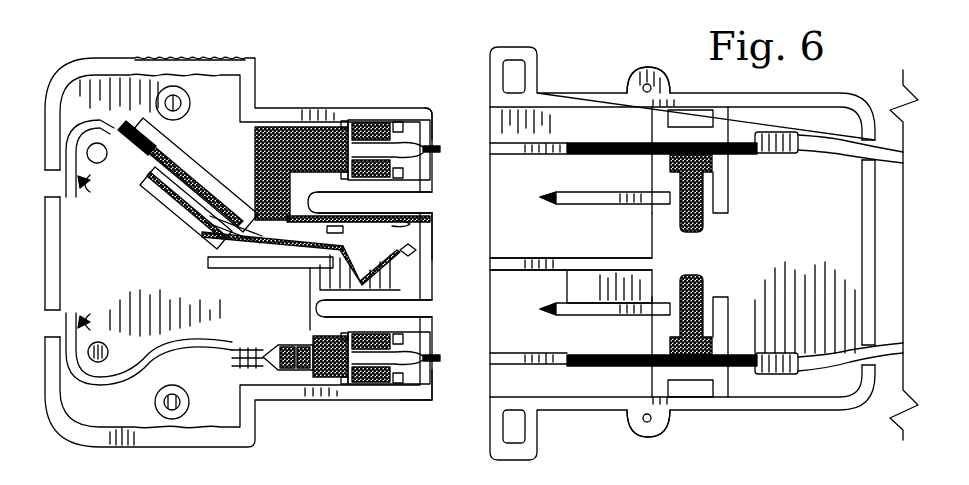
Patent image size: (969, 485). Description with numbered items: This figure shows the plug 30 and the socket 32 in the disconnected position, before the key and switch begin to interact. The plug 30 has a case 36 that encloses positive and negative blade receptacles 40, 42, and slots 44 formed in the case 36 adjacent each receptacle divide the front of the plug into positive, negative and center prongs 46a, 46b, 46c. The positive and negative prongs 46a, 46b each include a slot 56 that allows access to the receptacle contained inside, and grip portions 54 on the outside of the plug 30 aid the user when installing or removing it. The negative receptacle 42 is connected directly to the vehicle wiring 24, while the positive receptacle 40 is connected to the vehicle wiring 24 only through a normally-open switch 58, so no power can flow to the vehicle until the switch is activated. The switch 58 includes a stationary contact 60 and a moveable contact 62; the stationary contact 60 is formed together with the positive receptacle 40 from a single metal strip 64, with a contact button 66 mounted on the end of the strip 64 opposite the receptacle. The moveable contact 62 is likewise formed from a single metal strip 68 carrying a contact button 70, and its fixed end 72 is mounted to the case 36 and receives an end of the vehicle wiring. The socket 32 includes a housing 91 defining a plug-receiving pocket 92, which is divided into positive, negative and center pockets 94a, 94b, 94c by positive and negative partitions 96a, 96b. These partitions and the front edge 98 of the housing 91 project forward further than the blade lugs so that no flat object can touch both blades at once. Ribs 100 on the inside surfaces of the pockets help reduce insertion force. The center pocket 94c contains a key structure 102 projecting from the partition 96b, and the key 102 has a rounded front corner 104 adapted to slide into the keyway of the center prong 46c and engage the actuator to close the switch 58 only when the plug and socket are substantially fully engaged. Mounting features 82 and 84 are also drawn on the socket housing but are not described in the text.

The vehicle wiring 24 is at (84, 310).
The plug 30 is at (250, 52).
The socket 32 is at (637, 57).
The case 36 is at (272, 99).
The positive receptacle 40 is at (405, 130).
The negative receptacle 42 is at (370, 385).
The slots 44 is at (412, 200).
The positive prong 46a is at (440, 118).
The negative prong 46b is at (438, 398).
The center prong 46c is at (436, 228).
The grip portions 54 is at (165, 58).
The slot 56 is at (436, 148).
The normally-open switch 58 is at (263, 251).
The stationary contact 60 is at (385, 224).
The moveable contact 62 is at (352, 250).
The metal strip 64 is at (257, 160).
The contact button 66 is at (360, 222).
The metal strip 68 is at (205, 233).
The contact button 70 is at (412, 243).
The fixed end 72 is at (200, 213).
The upper mounting boss 82 is at (627, 143).
The lower mounting boss 84 is at (610, 365).
The housing 91 is at (770, 410).
The plug-receiving pocket 92 is at (507, 314).
The positive pocket 94a is at (572, 185).
The negative pocket 94b is at (577, 342).
The center pocket 94c is at (594, 226).
The positive partition 96a is at (550, 188).
The negative partition 96b is at (548, 306).
The front edge 98 is at (493, 257).
The ribs 100 is at (553, 143).
The key structure 102 is at (657, 278).
The rounded front corner 104 is at (582, 271).